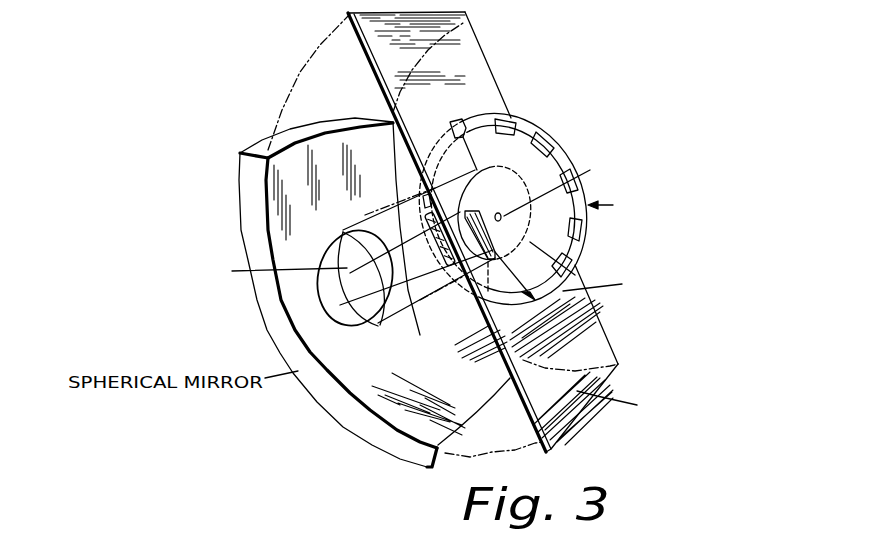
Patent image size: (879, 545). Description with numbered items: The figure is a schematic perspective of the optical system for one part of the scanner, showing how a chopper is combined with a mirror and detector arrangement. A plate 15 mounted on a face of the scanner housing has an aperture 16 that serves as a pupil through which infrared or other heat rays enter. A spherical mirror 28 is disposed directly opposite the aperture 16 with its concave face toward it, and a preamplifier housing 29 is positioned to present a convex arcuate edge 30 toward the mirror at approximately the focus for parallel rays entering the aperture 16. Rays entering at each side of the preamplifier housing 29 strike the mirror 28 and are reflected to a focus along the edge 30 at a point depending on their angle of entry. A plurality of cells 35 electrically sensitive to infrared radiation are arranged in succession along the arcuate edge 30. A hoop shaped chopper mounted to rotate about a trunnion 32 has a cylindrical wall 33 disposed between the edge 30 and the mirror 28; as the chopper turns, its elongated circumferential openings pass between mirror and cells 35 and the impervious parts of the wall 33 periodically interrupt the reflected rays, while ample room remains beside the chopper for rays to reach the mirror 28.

The plate 15 is at (472, 72).
The aperture 16 is at (473, 153).
The spherical mirror 28 is at (300, 299).
The preamplifier housing 29 is at (476, 212).
The convex arcuate edge 30 is at (430, 290).
The trunnion 32 is at (504, 218).
The cylindrical wall 33 is at (550, 280).
The cells 35 is at (347, 300).